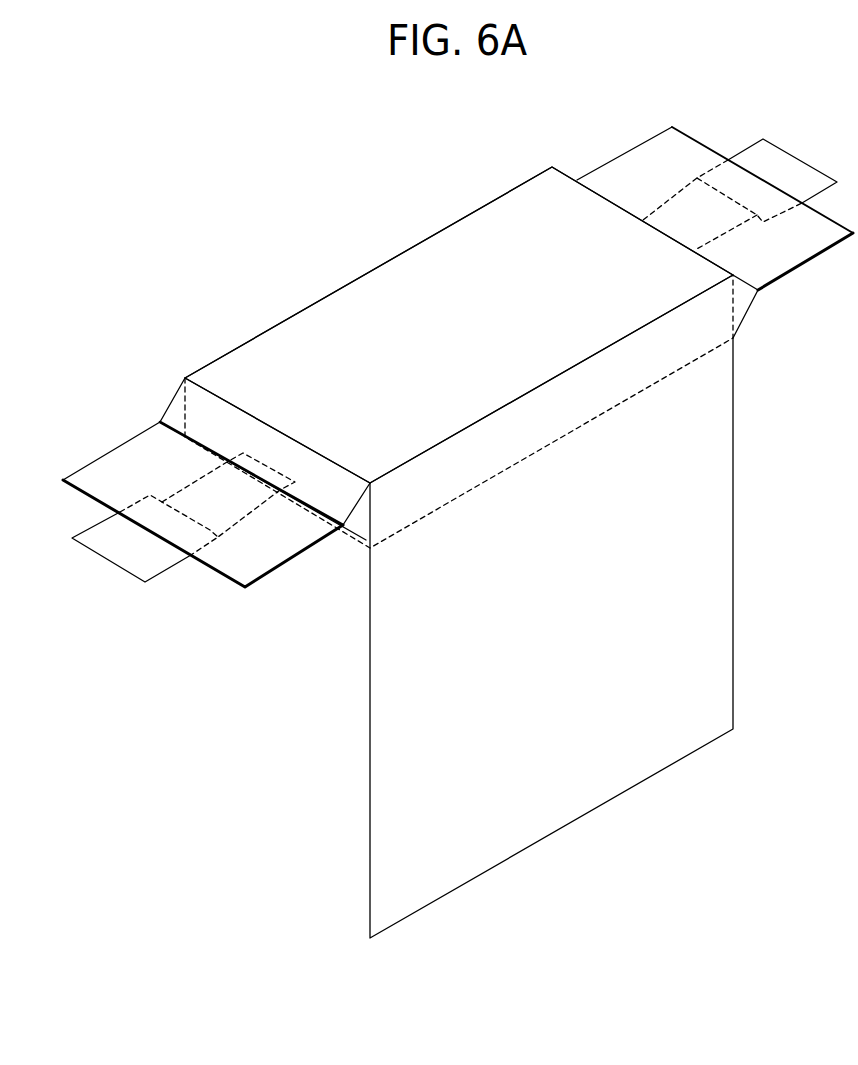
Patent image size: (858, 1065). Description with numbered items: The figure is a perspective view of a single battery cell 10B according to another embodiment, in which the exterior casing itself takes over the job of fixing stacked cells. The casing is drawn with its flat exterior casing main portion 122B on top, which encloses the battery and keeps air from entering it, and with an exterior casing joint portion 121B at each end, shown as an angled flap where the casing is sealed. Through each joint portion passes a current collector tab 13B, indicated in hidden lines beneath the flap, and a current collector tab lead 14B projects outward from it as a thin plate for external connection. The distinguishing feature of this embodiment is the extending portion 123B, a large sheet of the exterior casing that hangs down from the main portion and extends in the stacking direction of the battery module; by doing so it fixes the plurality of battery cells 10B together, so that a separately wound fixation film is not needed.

The battery cell 10B is at (218, 177).
The exterior casing joint portion 121B is at (133, 465).
The exterior casing main portion 122B is at (443, 280).
The extending portion 123B is at (689, 536).
The current collector tab 13B is at (186, 493).
The current collector tab lead 14B is at (145, 558).